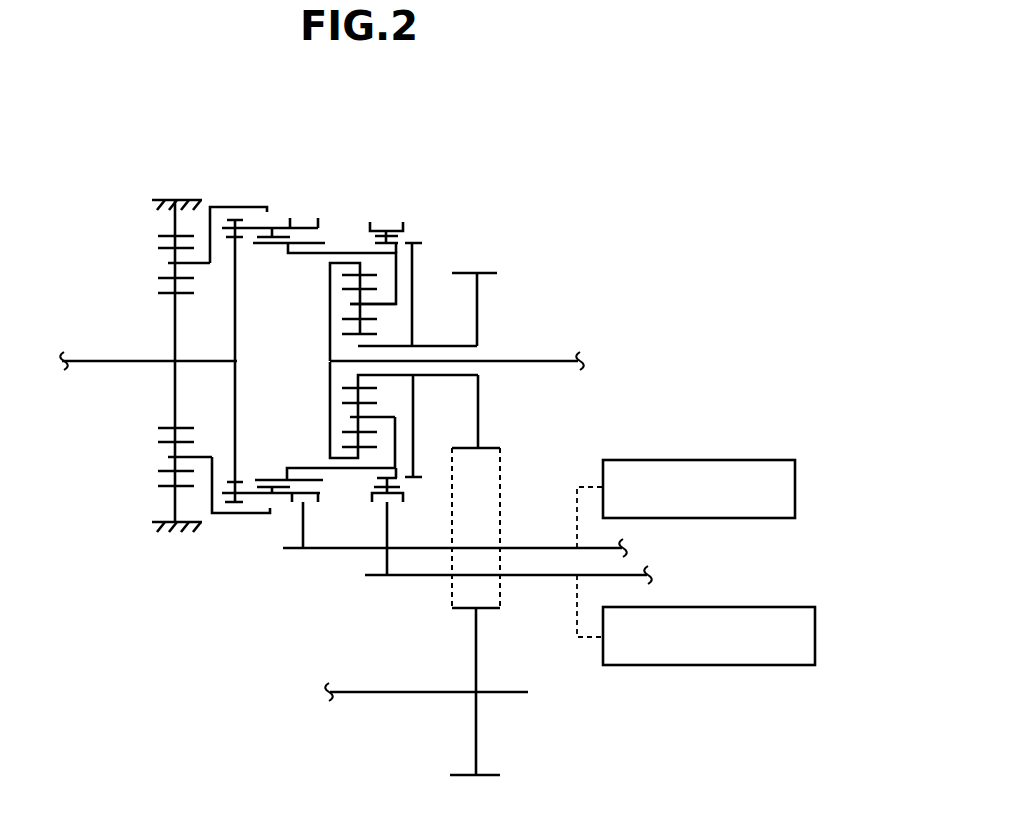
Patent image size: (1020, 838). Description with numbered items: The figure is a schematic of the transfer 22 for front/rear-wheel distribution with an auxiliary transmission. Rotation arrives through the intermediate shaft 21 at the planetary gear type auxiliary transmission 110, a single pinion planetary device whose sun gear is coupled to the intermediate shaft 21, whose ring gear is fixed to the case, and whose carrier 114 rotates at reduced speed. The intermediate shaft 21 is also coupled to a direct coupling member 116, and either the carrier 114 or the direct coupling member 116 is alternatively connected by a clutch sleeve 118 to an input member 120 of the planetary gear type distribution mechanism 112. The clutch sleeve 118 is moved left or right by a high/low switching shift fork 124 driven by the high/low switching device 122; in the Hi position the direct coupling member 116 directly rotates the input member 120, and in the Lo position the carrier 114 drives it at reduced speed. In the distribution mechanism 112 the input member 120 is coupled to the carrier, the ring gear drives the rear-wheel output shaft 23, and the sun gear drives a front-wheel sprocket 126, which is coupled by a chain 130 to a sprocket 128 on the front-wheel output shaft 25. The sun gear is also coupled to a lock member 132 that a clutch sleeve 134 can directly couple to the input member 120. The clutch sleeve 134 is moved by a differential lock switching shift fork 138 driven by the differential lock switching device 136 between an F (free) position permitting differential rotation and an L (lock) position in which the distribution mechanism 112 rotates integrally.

The transfer 22 is at (591, 165).
The auxiliary transmission 110 is at (120, 211).
The distribution mechanism 112 is at (447, 207).
The carrier 114 is at (233, 205).
The direct coupling member 116 is at (233, 296).
The clutch sleeve 118 is at (290, 224).
The input member 120 is at (296, 258).
The high/low switching device 122 is at (690, 465).
The high/low switching shift fork 124 is at (300, 522).
The front-wheel sprocket 126 is at (479, 272).
The sprocket 128 is at (487, 777).
The chain 130 is at (503, 473).
The lock member 132 is at (414, 283).
The clutch sleeve 134 is at (386, 228).
The differential lock switching device 136 is at (690, 612).
The differential lock switching shift fork 138 is at (385, 522).
The intermediate shaft 21 is at (100, 360).
The rear-wheel output shaft 23 is at (538, 360).
The front-wheel output shaft 25 is at (380, 694).